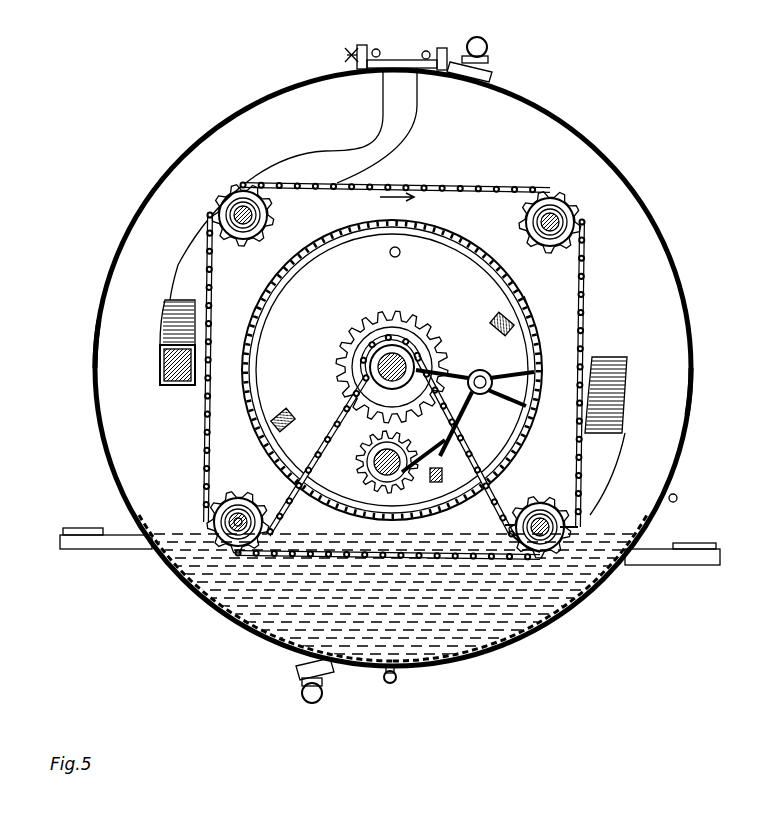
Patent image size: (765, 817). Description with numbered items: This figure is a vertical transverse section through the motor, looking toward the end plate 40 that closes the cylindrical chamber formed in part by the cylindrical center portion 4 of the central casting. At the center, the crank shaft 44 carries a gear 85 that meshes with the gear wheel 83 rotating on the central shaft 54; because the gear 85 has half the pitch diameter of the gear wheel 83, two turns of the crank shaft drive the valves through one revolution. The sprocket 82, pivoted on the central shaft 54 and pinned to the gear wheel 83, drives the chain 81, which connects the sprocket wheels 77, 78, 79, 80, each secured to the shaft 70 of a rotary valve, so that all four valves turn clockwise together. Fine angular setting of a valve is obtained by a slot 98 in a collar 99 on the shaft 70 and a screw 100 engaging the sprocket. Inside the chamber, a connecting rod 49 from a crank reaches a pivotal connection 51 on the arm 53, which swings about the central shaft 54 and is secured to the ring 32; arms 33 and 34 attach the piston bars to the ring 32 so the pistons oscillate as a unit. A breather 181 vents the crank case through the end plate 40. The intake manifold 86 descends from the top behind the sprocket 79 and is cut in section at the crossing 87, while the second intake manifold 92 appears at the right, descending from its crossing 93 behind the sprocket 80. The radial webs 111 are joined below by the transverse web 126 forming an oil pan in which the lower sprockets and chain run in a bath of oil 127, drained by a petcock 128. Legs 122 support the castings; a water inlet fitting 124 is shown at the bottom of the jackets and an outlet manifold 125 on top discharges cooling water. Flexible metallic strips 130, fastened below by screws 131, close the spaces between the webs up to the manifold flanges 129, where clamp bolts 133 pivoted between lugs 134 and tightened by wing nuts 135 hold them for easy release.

The cylindrical center portion 4 is at (526, 308).
The ring 32 is at (262, 298).
The arm 33 is at (284, 418).
The arm 34 is at (497, 322).
The end plate 40 is at (473, 282).
The crank shaft 44 is at (362, 462).
The connecting rod 49 is at (462, 414).
The pivotal connection 51 is at (480, 372).
The arm 53 is at (520, 384).
The central shaft 54 is at (420, 364).
The shaft 70 is at (210, 514).
The sprocket wheel 77 is at (236, 492).
The sprocket wheel 78 is at (518, 226).
The sprocket wheel 79 is at (276, 216).
The sprocket wheel 80 is at (520, 498).
The chain 81 is at (463, 184).
The sprocket 82 is at (376, 366).
The gear wheel 83 is at (410, 327).
The gear 85 is at (396, 446).
The intake manifold 86 is at (336, 150).
The crossing over 87 is at (162, 362).
The second intake manifold 92 is at (600, 470).
The crossing over 93 is at (624, 368).
The slot 98 is at (568, 527).
The collar 99 is at (508, 525).
The screw 100 is at (556, 522).
The radial web 111 is at (125, 405).
The leg 122 is at (128, 550).
The drain valve 124 is at (302, 693).
The outlet manifold 125 is at (494, 56).
The transverse web 126 is at (206, 592).
The bath of oil 127 is at (262, 628).
The petcock 128 is at (398, 681).
The flange 129 is at (420, 86).
The flexible metallic strip 130 is at (97, 352).
The screw 131 is at (676, 497).
The clamp bolt 133 is at (362, 48).
The lug 134 is at (379, 52).
The wing nut 135 is at (347, 55).
The breather 181 is at (401, 255).